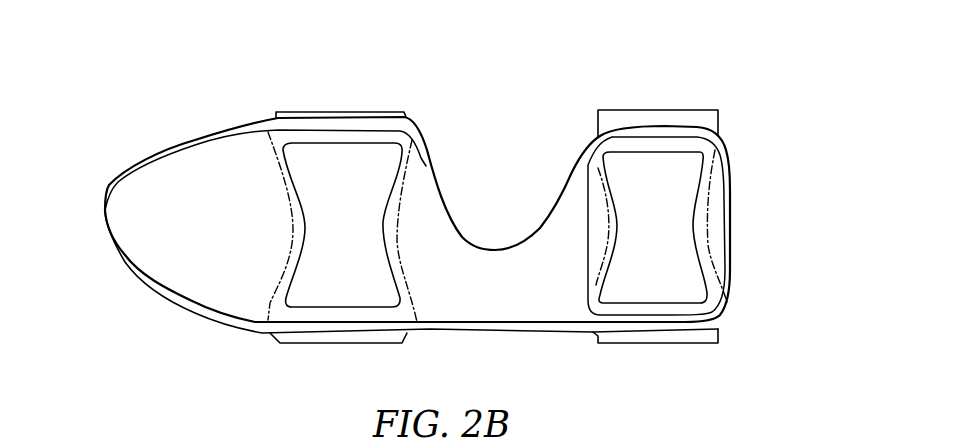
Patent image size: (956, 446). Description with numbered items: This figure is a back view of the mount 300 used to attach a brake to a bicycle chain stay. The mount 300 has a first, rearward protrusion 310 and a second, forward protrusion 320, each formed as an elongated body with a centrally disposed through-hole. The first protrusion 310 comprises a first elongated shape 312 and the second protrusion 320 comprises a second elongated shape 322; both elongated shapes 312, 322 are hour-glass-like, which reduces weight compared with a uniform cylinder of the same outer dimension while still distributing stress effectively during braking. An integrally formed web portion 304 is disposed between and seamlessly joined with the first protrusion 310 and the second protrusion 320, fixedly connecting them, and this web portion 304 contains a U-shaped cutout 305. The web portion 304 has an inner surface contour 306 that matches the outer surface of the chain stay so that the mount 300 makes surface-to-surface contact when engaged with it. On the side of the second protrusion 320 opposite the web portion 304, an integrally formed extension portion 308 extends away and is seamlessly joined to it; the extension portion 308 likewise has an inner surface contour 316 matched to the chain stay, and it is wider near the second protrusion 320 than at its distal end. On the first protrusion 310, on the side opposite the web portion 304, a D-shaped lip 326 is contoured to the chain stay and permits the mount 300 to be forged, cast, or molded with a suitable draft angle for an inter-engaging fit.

The mount 300 is at (704, 95).
The web portion 304 is at (503, 327).
The U-shaped cutout 305 is at (560, 188).
The inner surface contour 306 is at (520, 282).
The extension portion 308 is at (157, 296).
The first protrusion 310 is at (728, 126).
The first elongated shape 312 is at (288, 288).
The inner surface contour 316 is at (204, 221).
The second protrusion 320 is at (268, 108).
The second elongated shape 322 is at (599, 281).
The D-shaped lip 326 is at (731, 207).